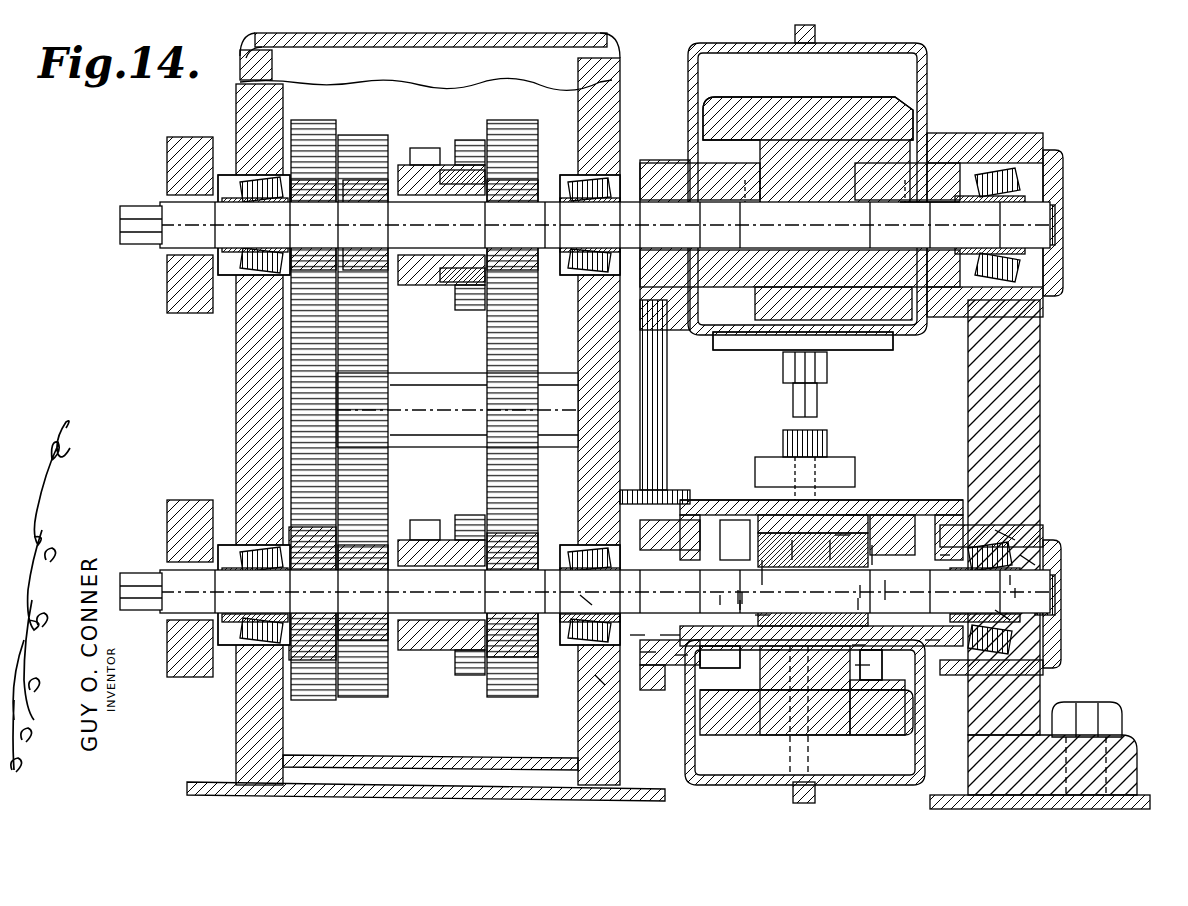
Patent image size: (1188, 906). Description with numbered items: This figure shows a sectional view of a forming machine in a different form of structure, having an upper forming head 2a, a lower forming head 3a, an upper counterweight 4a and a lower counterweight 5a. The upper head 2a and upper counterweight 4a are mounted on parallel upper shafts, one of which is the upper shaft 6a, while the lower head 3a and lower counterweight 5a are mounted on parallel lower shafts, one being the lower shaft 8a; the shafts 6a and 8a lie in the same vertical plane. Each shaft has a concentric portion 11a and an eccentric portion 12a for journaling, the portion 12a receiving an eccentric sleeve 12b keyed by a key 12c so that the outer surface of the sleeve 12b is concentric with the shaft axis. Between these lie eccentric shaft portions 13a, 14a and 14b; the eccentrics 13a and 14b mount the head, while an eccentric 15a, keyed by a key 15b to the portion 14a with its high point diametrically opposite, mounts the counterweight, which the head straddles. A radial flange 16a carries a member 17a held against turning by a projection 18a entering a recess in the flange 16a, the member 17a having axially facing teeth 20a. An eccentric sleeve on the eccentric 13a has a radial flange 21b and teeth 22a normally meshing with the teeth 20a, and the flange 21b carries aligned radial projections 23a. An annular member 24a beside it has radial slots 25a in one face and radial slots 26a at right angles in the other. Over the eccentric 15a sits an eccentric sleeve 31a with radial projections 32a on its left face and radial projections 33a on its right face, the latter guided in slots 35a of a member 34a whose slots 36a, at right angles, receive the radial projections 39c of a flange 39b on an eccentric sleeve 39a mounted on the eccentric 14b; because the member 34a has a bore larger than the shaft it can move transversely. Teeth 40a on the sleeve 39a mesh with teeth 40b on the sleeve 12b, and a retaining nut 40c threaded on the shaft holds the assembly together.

The upper forming head 2a is at (912, 330).
The lower forming head 3a is at (903, 510).
The upper counterweight 4a is at (822, 108).
The lower counterweight 5a is at (760, 722).
The upper shaft 6a is at (928, 212).
The lower shaft 8a is at (893, 590).
The shaft portion 11a is at (585, 600).
The shaft portion 12a is at (1000, 615).
The eccentric sleeve 12b is at (1018, 580).
The key 12c is at (1030, 562).
The eccentric shaft portion 13a is at (668, 640).
The eccentric shaft portion 14a is at (770, 580).
The eccentric shaft portion 14b is at (930, 640).
The eccentric 15a is at (835, 545).
The key 15b is at (800, 545).
The radial flange 16a is at (648, 655).
The member 17a is at (635, 640).
The projection 18a is at (600, 680).
The teeth 20a is at (680, 660).
The radial flange 21b is at (735, 655).
The teeth 22a is at (738, 597).
The radial projections 23a is at (762, 620).
The annular member 24a is at (775, 650).
The radial slots 25a is at (727, 600).
The radial slots 26a is at (742, 598).
The eccentric sleeve 31a is at (843, 535).
The radial projections 32a is at (740, 605).
The radial projections 33a is at (858, 604).
The member 34a is at (852, 520).
The radial slots 35a is at (860, 590).
The radial slots 36a is at (878, 560).
The eccentric sleeve 39a is at (858, 648).
The flange 39b is at (862, 665).
The radial projections 39c is at (858, 645).
The teeth 40a is at (1005, 535).
The teeth 40b is at (945, 555).
The retaining nut 40c is at (1020, 592).